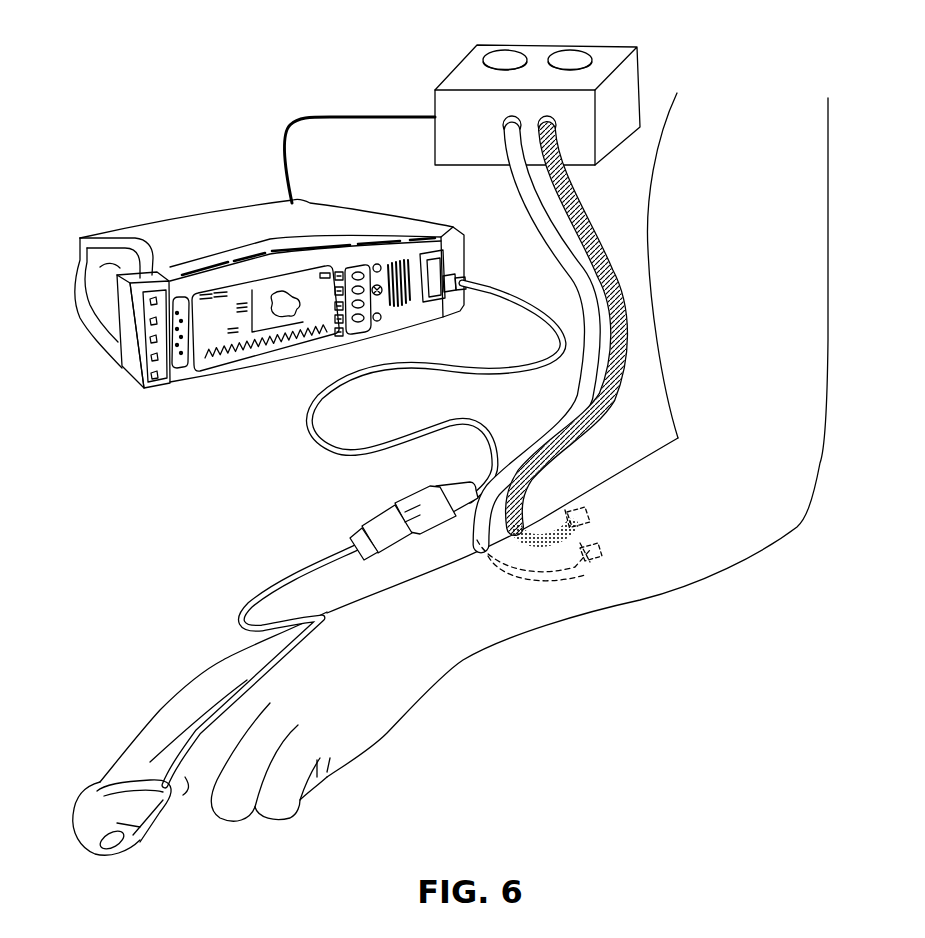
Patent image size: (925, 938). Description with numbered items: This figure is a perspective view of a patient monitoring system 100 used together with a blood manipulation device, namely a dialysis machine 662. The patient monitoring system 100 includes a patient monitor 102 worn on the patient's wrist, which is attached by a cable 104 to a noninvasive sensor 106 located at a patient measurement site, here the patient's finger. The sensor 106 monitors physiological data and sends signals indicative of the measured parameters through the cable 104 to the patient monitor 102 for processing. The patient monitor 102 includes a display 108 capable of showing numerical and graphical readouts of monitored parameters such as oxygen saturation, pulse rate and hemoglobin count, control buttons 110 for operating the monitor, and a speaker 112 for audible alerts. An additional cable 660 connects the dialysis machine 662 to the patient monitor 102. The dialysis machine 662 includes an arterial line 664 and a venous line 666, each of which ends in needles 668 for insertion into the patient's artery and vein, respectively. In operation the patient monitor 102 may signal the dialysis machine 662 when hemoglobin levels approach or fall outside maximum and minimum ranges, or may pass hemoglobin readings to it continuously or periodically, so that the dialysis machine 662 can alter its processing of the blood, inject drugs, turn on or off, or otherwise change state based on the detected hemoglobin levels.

The patient monitoring system 100 is at (190, 132).
The patient monitor 102 is at (320, 220).
The cable 104 is at (334, 442).
The sensor 106 is at (140, 828).
The display 108 is at (200, 367).
The control buttons 110 is at (357, 320).
The speaker 112 is at (403, 307).
The additional cable 660 is at (362, 117).
The dialysis machine 662 is at (460, 100).
The arterial line 664 is at (523, 218).
The venous line 666 is at (580, 222).
The needles 668 is at (583, 518).